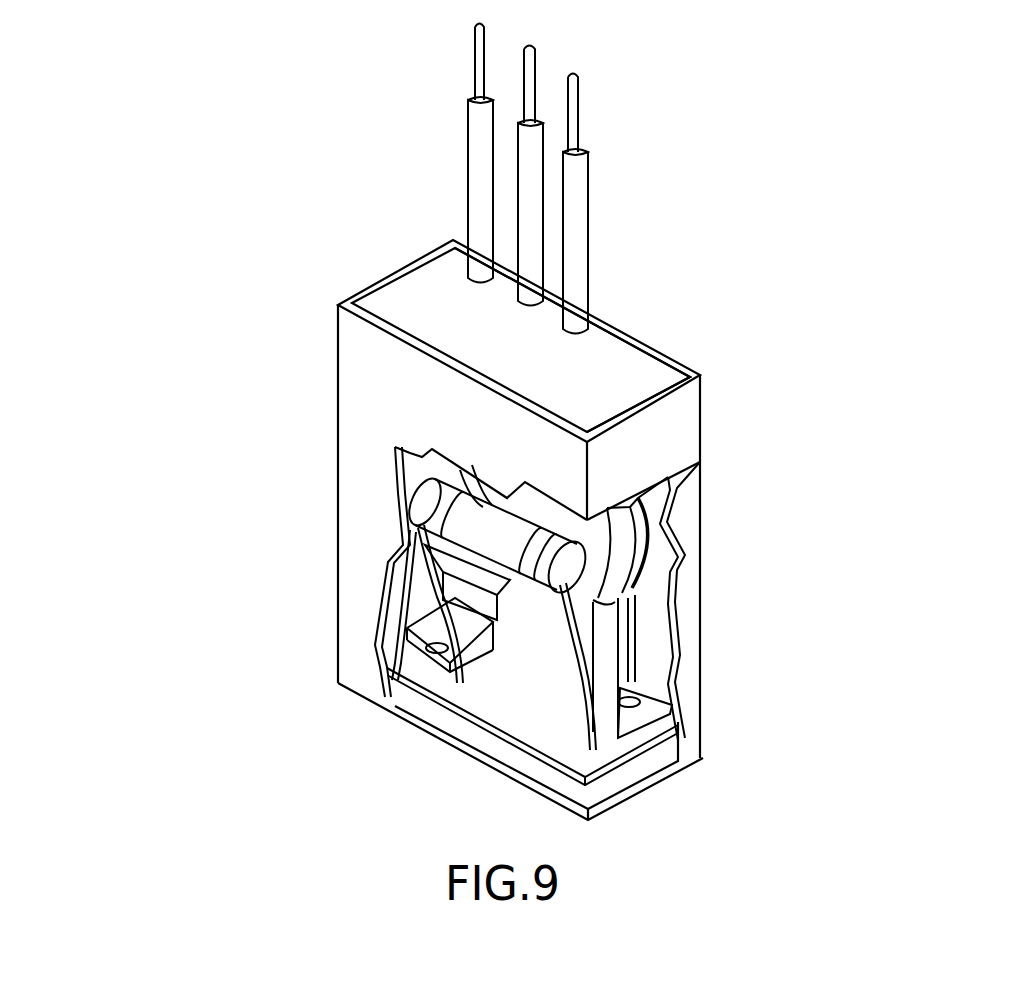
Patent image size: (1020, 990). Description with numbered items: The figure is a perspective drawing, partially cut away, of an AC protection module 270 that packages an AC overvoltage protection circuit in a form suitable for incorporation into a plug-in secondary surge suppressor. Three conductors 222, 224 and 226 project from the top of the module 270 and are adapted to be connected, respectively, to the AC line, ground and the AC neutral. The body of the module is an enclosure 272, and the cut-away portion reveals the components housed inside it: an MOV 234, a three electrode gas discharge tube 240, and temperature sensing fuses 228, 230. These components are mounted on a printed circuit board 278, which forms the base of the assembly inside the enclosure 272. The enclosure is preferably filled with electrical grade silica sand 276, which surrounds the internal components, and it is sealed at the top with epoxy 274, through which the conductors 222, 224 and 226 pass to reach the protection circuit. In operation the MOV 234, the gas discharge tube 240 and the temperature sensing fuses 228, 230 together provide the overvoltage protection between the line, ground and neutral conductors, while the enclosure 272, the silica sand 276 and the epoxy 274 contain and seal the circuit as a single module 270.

The conductor 222 is at (487, 205).
The conductor 224 is at (530, 257).
The conductor 226 is at (581, 260).
The temperature sensing fuse 228 is at (320, 617).
The temperature sensing fuse 230 is at (477, 578).
The MOV 234 is at (637, 517).
The three electrode gas discharge tube 240 is at (430, 495).
The module 270 is at (738, 338).
The enclosure 272 is at (395, 393).
The epoxy 274 is at (450, 327).
The electrical grade silica sand 276 is at (647, 620).
The printed circuit board 278 is at (483, 708).